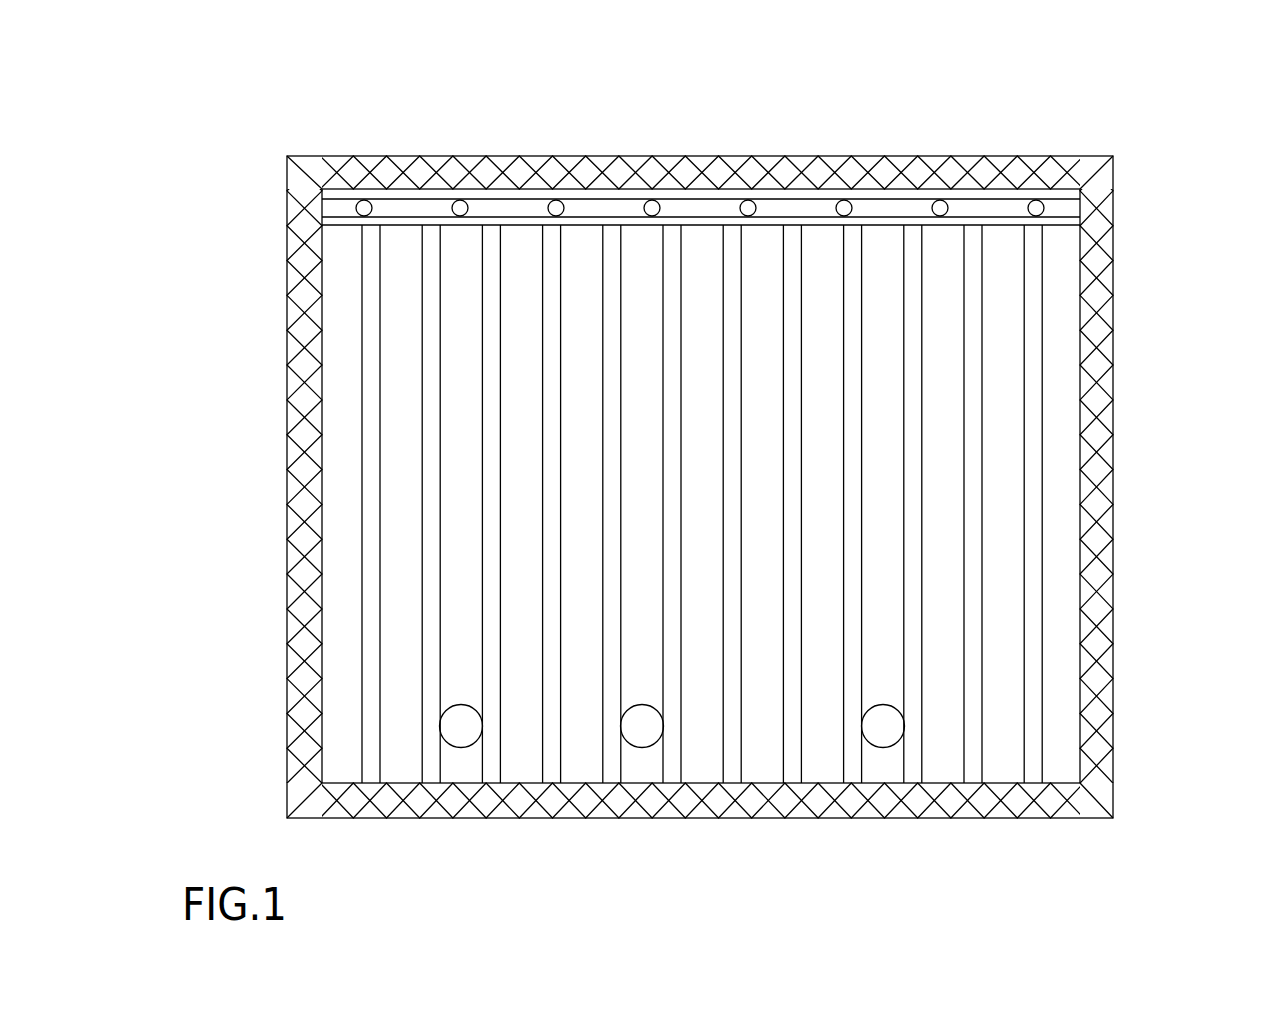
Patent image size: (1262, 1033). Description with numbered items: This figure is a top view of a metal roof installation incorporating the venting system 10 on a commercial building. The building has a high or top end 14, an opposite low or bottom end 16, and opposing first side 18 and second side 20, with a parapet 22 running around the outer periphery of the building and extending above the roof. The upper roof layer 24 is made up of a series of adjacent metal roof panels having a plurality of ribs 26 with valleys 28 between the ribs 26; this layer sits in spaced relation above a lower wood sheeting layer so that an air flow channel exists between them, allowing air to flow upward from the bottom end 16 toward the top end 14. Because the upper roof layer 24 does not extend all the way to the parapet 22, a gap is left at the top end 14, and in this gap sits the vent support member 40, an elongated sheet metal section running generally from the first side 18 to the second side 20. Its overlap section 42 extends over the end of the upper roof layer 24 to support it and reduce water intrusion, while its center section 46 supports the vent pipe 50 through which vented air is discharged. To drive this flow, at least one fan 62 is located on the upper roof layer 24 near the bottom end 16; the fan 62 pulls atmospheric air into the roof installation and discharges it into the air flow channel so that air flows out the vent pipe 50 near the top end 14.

The venting system 10 is at (1141, 128).
The top end 14 is at (688, 78).
The bottom end 16 is at (740, 900).
The first side 18 is at (1145, 392).
The second side 20 is at (254, 541).
The parapet 22 is at (1110, 594).
The upper roof layer 24 is at (997, 321).
The ribs 26 is at (1024, 673).
The valleys 28 is at (398, 353).
The vent support member 40 is at (701, 166).
The overlap section 42 is at (377, 220).
The center section 46 is at (590, 208).
The vent pipe 50 is at (940, 200).
The fan 62 is at (633, 742).